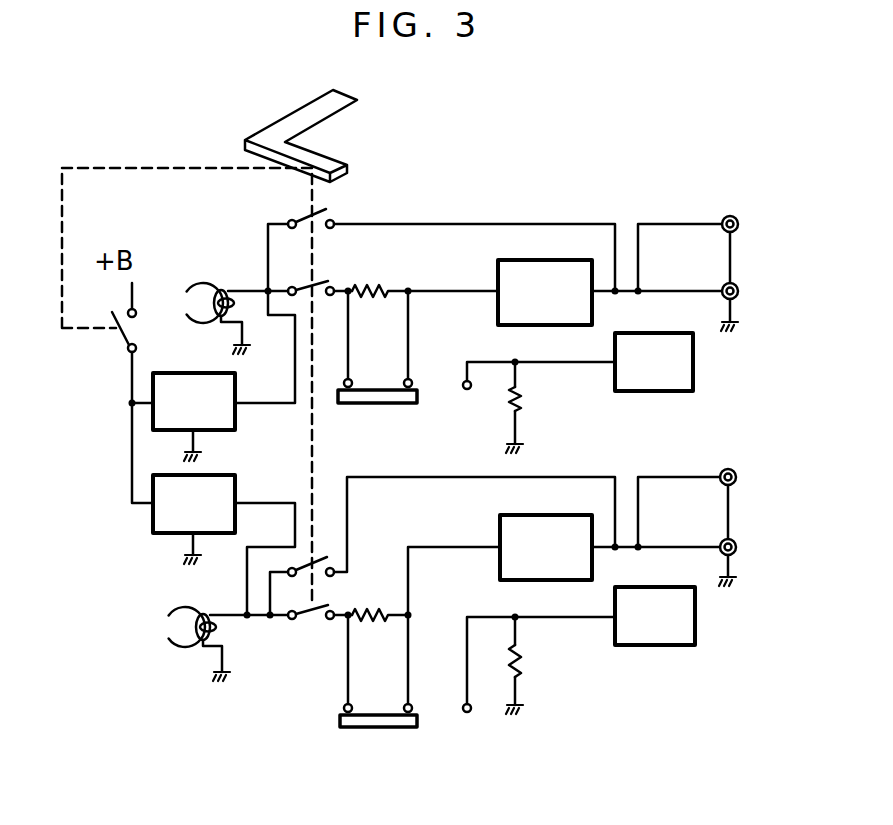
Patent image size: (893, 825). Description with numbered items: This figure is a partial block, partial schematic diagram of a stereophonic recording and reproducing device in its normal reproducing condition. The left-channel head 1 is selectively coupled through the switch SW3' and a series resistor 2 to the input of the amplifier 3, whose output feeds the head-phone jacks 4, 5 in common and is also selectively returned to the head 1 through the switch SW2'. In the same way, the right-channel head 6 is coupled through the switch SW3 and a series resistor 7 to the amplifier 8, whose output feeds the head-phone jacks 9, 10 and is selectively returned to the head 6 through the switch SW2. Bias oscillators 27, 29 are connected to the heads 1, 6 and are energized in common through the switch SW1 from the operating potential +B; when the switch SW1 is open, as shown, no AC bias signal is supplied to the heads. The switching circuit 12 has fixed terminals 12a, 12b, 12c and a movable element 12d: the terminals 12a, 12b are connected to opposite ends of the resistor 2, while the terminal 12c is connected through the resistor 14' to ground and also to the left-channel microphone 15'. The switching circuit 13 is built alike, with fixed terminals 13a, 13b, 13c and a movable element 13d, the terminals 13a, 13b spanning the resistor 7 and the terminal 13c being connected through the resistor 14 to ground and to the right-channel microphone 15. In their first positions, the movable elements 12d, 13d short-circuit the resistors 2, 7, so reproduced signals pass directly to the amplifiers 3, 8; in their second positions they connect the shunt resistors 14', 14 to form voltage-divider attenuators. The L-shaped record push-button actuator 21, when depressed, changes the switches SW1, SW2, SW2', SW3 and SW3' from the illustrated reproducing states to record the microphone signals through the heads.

The record push-button actuator 21 is at (278, 132).
The switch SW1 is at (134, 338).
The reproducing transducer 1 is at (203, 283).
The switch SW2' is at (287, 201).
The switch SW3' is at (327, 264).
The resistor 2 is at (388, 284).
The amplifier 3 is at (545, 260).
The head-phone jack 4 is at (738, 226).
The head-phone jack 5 is at (738, 293).
The switching circuit 12 is at (413, 383).
The fixed terminal 12a is at (344, 387).
The fixed terminal 12b is at (404, 382).
The fixed terminal 12c is at (467, 390).
The movable element 12d is at (382, 404).
The resistor 14' is at (546, 407).
The microphone 15' is at (679, 379).
The bias oscillator 27 is at (236, 381).
The bias oscillator 29 is at (236, 493).
The reproducing transducer 6 is at (176, 648).
The switch SW2 is at (329, 583).
The switch SW3 is at (308, 639).
The resistor 7 is at (380, 610).
The amplifier 8 is at (535, 515).
The head-phone jack 9 is at (736, 479).
The head-phone jack 10 is at (736, 549).
The switching circuit 13 is at (381, 707).
The fixed terminal 13a is at (344, 711).
The fixed terminal 13b is at (404, 706).
The fixed terminal 13c is at (463, 706).
The movable element 13d is at (384, 728).
The resistor 14 is at (550, 667).
The microphone 15 is at (678, 639).